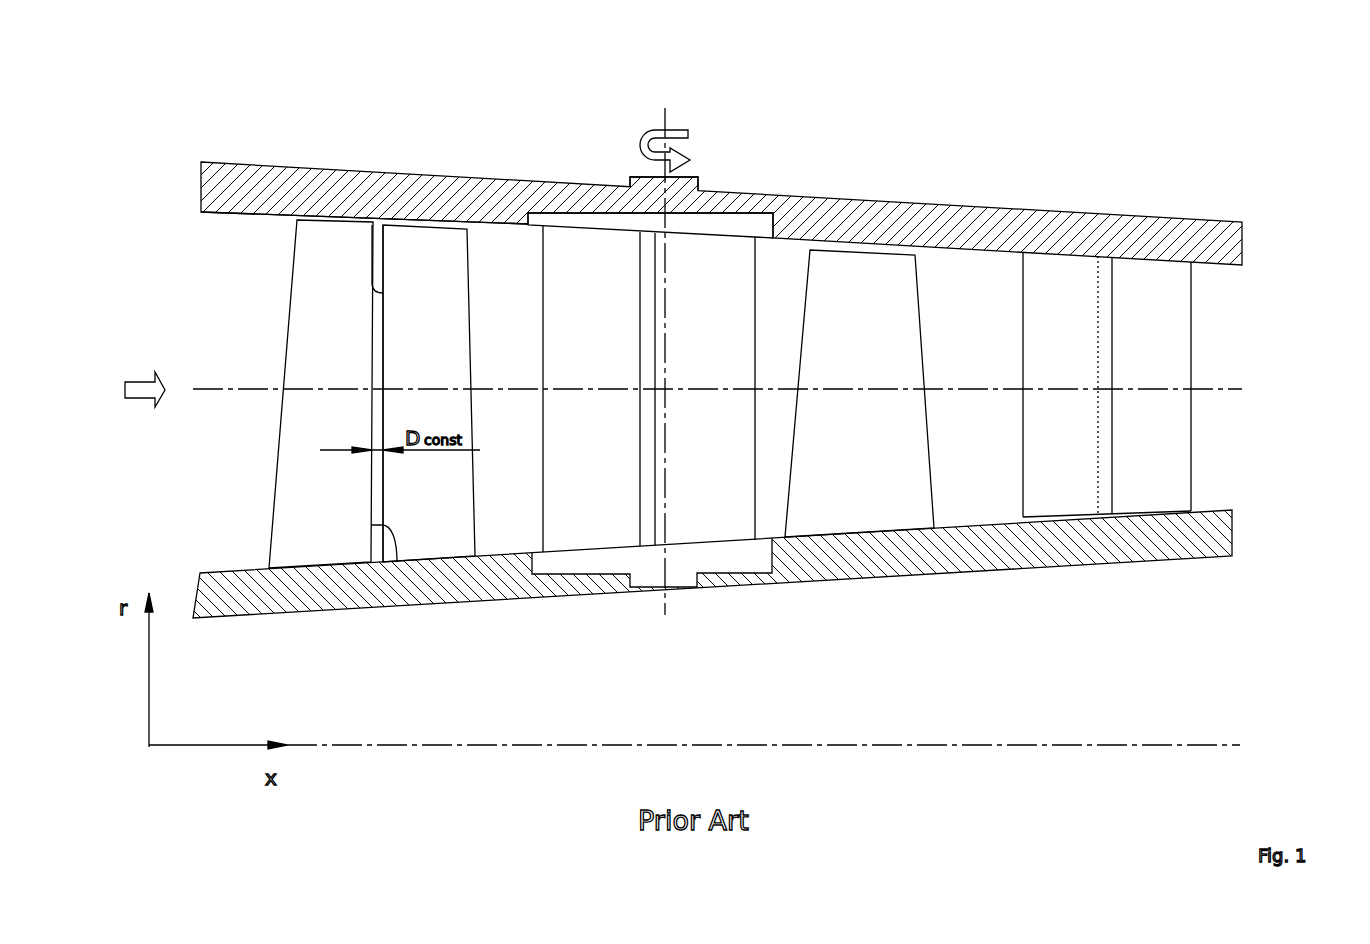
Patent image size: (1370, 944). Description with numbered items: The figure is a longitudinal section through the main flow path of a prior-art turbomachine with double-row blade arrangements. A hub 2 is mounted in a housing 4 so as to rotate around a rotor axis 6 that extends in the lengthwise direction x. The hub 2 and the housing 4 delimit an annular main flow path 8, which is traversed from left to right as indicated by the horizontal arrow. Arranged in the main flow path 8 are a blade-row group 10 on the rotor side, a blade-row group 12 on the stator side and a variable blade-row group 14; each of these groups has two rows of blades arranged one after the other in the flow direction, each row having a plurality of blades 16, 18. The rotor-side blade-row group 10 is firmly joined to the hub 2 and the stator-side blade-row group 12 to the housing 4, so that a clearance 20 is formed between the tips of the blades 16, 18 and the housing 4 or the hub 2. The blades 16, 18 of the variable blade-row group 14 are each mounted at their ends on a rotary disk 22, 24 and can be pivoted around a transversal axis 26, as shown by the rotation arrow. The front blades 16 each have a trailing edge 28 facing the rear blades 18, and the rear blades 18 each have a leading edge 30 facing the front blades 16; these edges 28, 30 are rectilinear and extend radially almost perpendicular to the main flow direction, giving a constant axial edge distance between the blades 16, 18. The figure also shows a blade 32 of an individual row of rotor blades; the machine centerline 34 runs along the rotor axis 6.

The hub 2 is at (1225, 538).
The housing 4 is at (1242, 238).
The rotor axis 6 is at (1195, 740).
The main flow path 8 is at (1215, 333).
The blade-row group on the rotor side 10 is at (433, 220).
The blade-row group on the stator side 12 is at (1145, 258).
The variable blade-row group 14 is at (738, 202).
The front blades 16 is at (305, 533).
The rear blades 18 is at (433, 532).
The clearance 20 is at (420, 225).
The rotary disk 22 is at (750, 555).
The rotary disk 24 is at (682, 185).
The transversal axis 26 is at (667, 113).
The trailing edge 28 is at (397, 562).
The leading edge 30 is at (373, 290).
The blade of an individual row of rotor blades 32 is at (886, 247).
The centerline 34 is at (1220, 388).